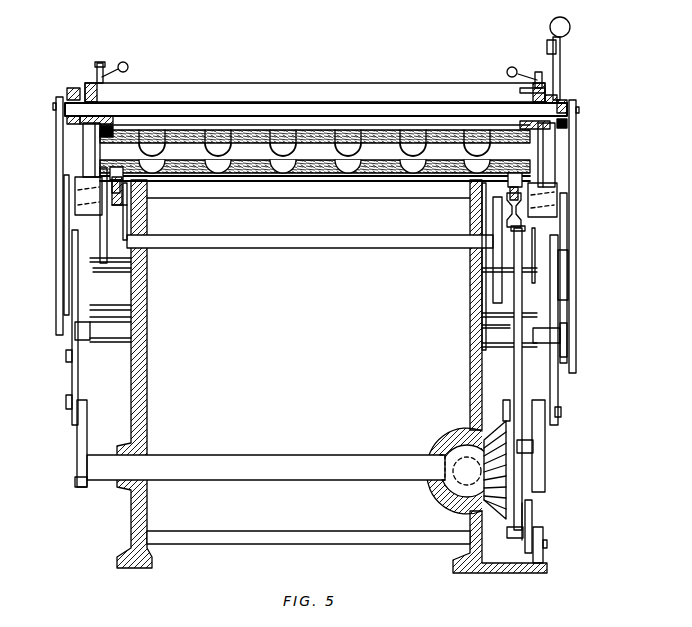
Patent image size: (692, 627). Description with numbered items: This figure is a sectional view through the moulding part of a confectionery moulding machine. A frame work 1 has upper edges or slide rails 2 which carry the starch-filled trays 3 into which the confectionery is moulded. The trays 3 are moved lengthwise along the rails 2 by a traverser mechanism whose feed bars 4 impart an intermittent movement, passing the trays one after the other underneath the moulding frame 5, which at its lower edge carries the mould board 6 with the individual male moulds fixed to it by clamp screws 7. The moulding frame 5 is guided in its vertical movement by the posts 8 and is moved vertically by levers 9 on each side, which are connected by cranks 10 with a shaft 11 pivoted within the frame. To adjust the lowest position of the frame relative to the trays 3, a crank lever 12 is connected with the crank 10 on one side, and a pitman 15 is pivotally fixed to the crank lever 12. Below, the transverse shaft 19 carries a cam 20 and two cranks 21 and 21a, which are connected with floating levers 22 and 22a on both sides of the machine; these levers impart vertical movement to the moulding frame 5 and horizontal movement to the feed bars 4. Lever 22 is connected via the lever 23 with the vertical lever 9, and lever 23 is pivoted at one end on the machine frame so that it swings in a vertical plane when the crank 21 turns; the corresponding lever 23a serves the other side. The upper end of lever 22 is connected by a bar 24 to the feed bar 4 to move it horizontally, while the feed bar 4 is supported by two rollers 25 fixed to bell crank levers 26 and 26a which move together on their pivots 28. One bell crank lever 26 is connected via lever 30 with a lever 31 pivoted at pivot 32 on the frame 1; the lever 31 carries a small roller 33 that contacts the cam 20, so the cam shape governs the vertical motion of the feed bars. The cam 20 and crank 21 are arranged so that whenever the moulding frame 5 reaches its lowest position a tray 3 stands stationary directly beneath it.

The frame work 1 is at (128, 516).
The slide rails 2 is at (152, 182).
The starch-filled trays 3 is at (330, 160).
The feed bars 4 is at (112, 170).
The moulding frame 5 is at (165, 83).
The mould board 6 is at (250, 144).
The clamp screws 7 is at (101, 62).
The posts 8 is at (88, 150).
The levers 9 is at (56, 180).
The cranks 10 is at (72, 88).
The shaft 11 is at (325, 104).
The crank lever 12 is at (562, 66).
The pitman 15 is at (547, 43).
The transverse shaft 19 is at (303, 455).
The cam 20 is at (525, 493).
The crank lever 21 is at (545, 442).
The crank lever 21a is at (80, 436).
The floating lever 22 is at (558, 393).
The floating lever 22a is at (72, 385).
The lever 23 is at (566, 362).
The lever 23a is at (62, 362).
The bar 24 is at (62, 252).
The rollers 25 is at (522, 215).
The bell crank levers 26 is at (493, 255).
The bell crank levers 26a is at (112, 206).
The pivots 28 is at (290, 235).
The lever 30 is at (518, 370).
The lever 31 is at (532, 518).
The pivot 32 is at (547, 545).
The small roller 33 is at (514, 539).